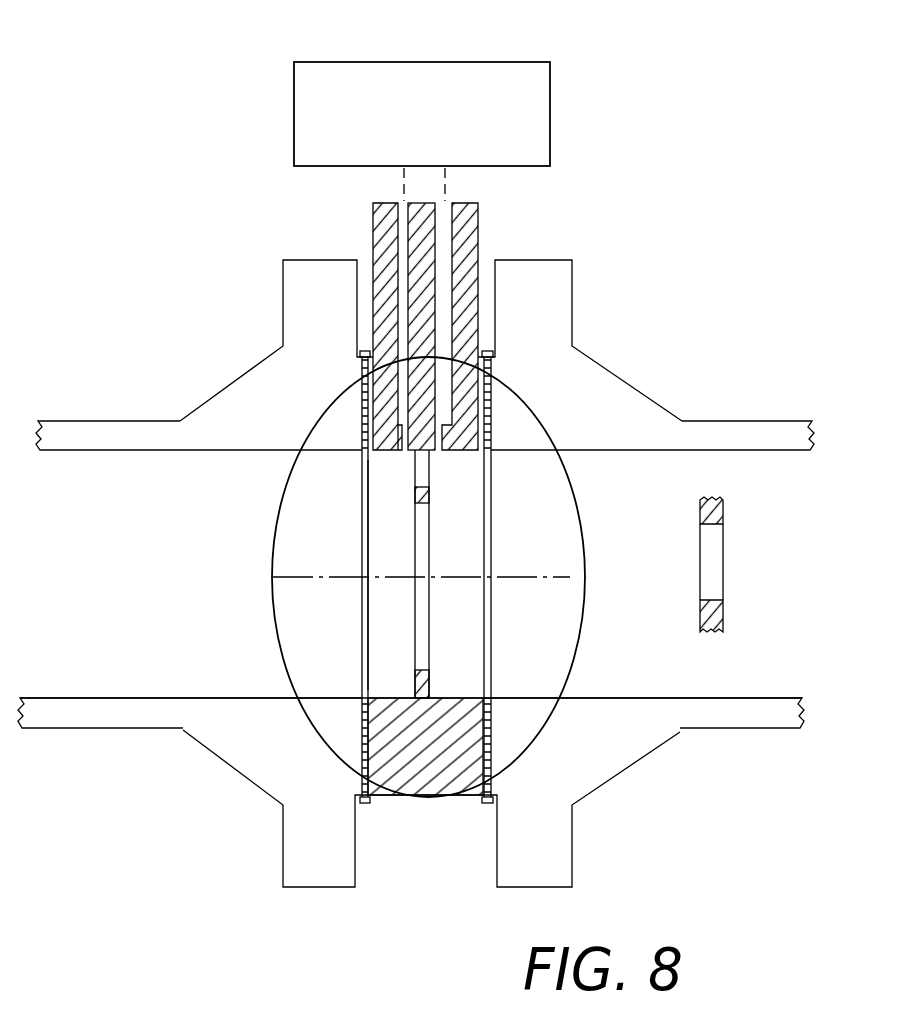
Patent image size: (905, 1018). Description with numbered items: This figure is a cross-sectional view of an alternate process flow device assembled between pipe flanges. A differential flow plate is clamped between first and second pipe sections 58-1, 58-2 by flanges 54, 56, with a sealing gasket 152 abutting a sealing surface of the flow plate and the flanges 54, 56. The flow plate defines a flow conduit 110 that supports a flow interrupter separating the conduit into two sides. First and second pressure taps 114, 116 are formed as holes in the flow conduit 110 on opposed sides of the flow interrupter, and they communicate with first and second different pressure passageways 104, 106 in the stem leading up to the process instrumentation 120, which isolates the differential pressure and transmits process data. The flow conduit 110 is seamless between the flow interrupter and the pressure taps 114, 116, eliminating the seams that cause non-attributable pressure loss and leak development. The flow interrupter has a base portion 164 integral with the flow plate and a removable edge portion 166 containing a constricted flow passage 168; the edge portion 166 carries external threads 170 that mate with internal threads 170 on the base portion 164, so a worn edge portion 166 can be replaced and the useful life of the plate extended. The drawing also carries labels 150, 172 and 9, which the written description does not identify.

The process instrumentation 120 is at (518, 62).
The stem assembly 150 is at (488, 218).
The first pressure passageway 104 is at (405, 318).
The second pressure passageway 106 is at (445, 298).
The flange 54 is at (277, 268).
The flange 56 is at (580, 275).
The pipe section 58-1 is at (80, 419).
The pipe section 58-2 is at (748, 421).
The ball 9 is at (547, 720).
The sealing gasket 152 is at (362, 403).
The flow conduit 110 is at (473, 452).
The first pressure tap 114 is at (398, 452).
The second pressure tap 116 is at (440, 452).
The cavity 172 is at (375, 554).
The base portion 164 is at (430, 687).
The removable edge portion 166 is at (726, 610).
The constricted flow passage 168 is at (715, 538).
The threads 170 is at (713, 500).